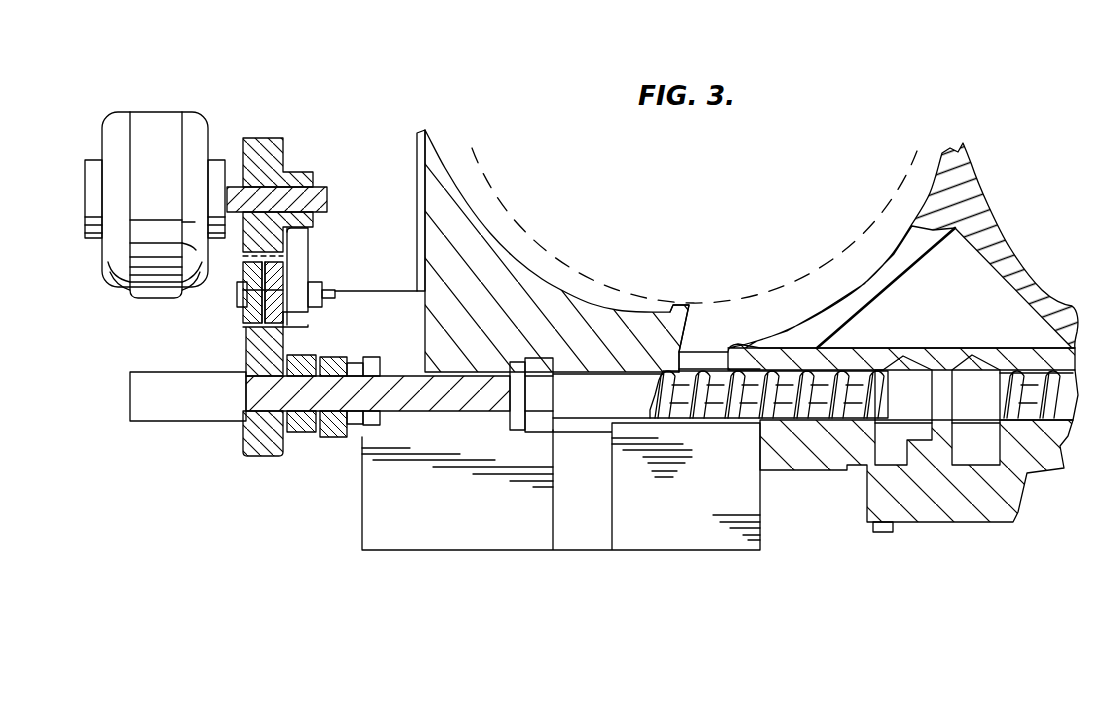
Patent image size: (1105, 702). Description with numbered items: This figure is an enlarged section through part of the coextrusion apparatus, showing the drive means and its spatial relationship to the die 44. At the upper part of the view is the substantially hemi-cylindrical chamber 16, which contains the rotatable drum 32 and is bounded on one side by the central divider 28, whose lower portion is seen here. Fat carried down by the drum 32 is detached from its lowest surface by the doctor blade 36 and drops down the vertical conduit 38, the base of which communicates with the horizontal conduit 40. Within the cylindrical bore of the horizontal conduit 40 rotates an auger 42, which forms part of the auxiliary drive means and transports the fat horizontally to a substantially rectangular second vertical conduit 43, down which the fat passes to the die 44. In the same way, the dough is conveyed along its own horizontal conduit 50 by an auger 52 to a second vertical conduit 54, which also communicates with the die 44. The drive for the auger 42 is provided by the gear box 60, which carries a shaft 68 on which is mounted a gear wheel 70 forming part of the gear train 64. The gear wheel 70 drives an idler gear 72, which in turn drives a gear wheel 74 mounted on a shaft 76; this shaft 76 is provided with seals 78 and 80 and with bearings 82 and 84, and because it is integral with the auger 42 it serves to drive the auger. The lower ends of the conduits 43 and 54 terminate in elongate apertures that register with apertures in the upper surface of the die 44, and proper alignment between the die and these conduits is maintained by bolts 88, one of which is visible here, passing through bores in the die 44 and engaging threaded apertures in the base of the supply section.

The hemi-cylindrical chamber 16 is at (485, 205).
The central divider 28 is at (933, 218).
The rotatable drum 32 is at (540, 247).
The doctor blade 36 is at (670, 316).
The vertical conduit 38 is at (688, 368).
The horizontal conduit 40 is at (785, 425).
The auger 42 is at (828, 395).
The second vertical conduit 43 is at (908, 432).
The die 44 is at (950, 512).
The horizontal conduit 50 is at (1058, 470).
The auger 52 is at (1020, 362).
The second vertical conduit 54 is at (973, 430).
The gear box 60 is at (164, 200).
The gear train 64 is at (211, 297).
The shaft 68 is at (305, 207).
The gear wheel 70 is at (260, 166).
The idler gear 72 is at (250, 300).
The gear wheel 74 is at (252, 456).
The shaft 76 is at (312, 435).
The seal 78 is at (352, 362).
The seal 80 is at (545, 362).
The bearing 82 is at (376, 365).
The bearing 84 is at (515, 365).
The bolt 88 is at (878, 532).